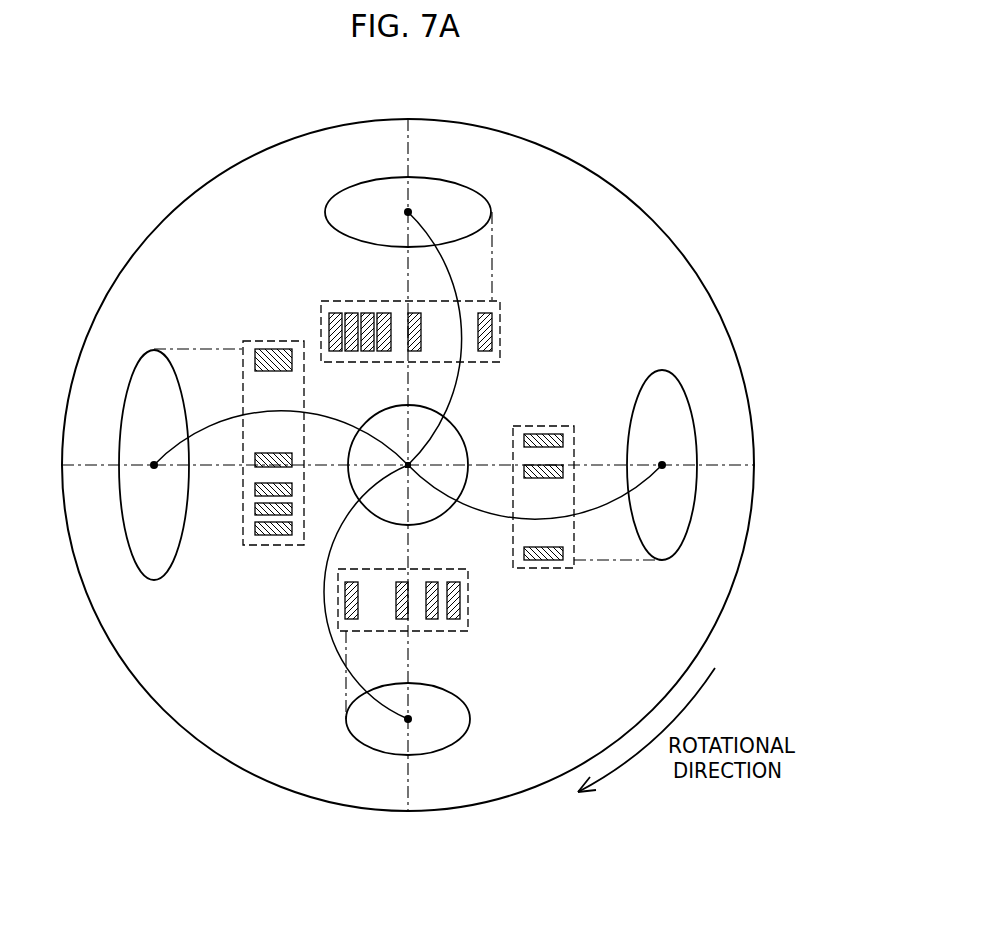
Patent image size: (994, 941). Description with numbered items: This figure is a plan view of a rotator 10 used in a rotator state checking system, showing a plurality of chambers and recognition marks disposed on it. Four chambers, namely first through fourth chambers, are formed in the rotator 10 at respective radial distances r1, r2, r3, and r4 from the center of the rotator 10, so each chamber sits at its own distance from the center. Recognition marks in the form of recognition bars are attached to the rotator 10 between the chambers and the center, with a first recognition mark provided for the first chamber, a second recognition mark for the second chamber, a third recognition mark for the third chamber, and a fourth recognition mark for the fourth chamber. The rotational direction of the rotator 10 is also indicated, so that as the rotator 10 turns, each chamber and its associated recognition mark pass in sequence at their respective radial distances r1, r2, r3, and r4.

The rotator 10 is at (608, 181).
The radial distance r1 is at (535, 498).
The radial distance r2 is at (361, 592).
The radial distance r3 is at (281, 432).
The radial distance r4 is at (439, 338).